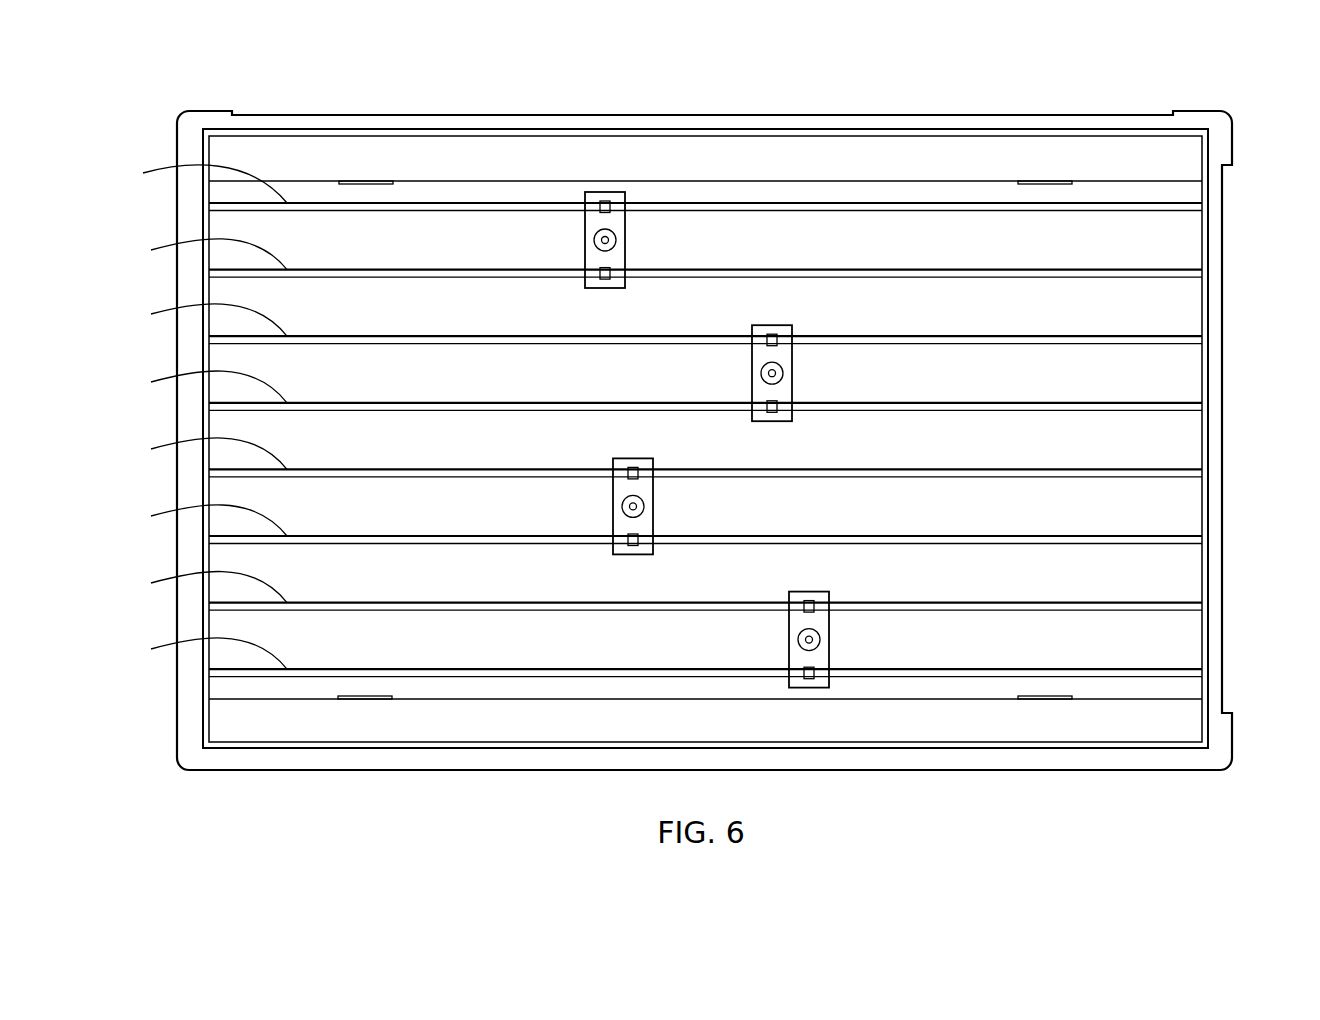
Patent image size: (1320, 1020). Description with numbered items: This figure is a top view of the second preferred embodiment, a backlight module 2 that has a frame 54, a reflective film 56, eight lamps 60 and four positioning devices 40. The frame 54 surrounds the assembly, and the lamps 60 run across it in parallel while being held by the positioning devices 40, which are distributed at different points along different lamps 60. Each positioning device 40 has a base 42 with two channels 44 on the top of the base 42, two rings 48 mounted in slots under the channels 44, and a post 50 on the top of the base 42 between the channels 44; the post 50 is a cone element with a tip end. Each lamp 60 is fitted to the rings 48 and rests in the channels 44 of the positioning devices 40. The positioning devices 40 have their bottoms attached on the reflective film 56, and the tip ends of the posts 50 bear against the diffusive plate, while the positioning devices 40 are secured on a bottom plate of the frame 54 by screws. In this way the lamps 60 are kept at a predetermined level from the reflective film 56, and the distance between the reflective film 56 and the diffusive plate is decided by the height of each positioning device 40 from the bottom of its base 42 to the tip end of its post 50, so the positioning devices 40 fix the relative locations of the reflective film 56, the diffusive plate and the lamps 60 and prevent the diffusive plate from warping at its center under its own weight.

The backlight module 2 is at (1103, 96).
The positioning device 40 is at (700, 439).
The base 42 is at (596, 192).
The channels 44 is at (625, 203).
The rings 48 is at (605, 202).
The post 50 is at (593, 240).
The frame 54 is at (1218, 243).
The reflective film 56 is at (902, 233).
The lamps 60 is at (199, 414).